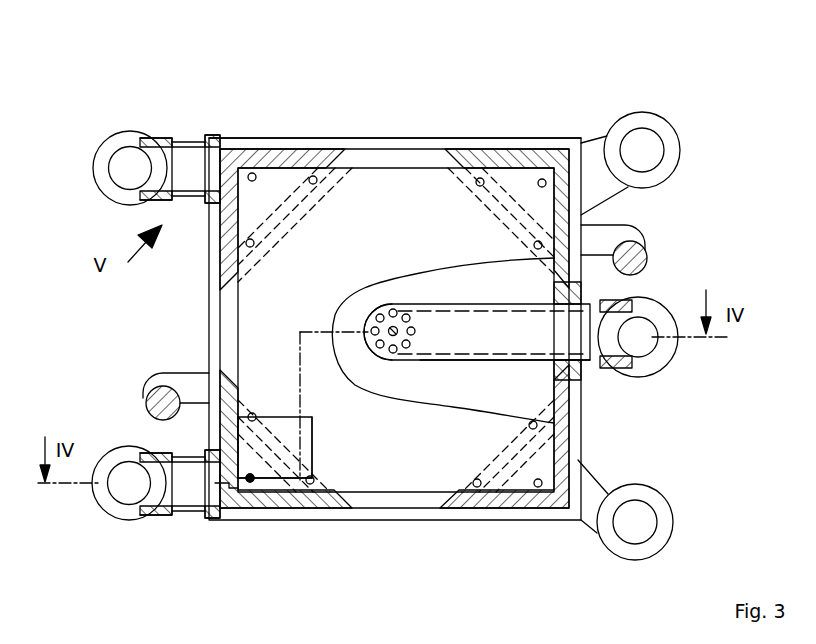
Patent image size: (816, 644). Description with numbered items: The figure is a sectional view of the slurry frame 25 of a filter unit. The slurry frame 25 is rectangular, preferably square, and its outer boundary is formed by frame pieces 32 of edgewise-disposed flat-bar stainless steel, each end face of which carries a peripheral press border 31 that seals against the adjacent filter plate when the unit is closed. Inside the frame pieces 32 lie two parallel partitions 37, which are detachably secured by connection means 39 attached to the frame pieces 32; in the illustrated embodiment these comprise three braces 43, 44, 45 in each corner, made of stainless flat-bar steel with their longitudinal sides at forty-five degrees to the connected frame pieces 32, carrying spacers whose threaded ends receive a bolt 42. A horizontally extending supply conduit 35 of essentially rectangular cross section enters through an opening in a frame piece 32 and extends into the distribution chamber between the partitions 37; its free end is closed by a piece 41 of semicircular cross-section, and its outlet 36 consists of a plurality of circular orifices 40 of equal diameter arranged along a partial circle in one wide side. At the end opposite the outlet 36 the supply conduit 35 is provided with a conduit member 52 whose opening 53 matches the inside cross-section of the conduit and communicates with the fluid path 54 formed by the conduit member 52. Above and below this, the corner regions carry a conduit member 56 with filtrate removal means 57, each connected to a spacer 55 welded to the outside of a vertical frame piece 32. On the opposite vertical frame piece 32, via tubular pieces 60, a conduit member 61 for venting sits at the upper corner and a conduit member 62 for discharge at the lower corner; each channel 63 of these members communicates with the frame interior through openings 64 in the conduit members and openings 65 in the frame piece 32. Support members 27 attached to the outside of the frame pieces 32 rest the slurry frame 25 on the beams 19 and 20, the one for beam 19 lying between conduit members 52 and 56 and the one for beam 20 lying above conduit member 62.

The beam 19 is at (635, 262).
The beam 20 is at (158, 402).
The slurry frame 25 is at (445, 112).
The support member 27 is at (598, 232).
The press border 31 is at (490, 147).
The frame piece 32 is at (413, 146).
The supply conduit 35 is at (505, 292).
The outlet 36 is at (428, 355).
The partition 37 is at (368, 195).
The connection means 39 is at (300, 135).
The orifice 40 is at (414, 330).
The piece 41 is at (368, 347).
The bolt 42 is at (395, 334).
The brace 43 is at (245, 505).
The brace 44 is at (265, 495).
The brace 45 is at (300, 486).
The conduit member 52 is at (647, 367).
The opening 53 is at (620, 365).
The fluid path 54 is at (640, 347).
The spacer 55 is at (597, 155).
The conduit member 56 is at (650, 120).
The filtrate removal means 57 is at (652, 158).
The tubular piece 60 is at (190, 177).
The conduit member 61 is at (108, 147).
The conduit member 62 is at (106, 512).
The channel 63 is at (128, 158).
The opening 64 is at (157, 177).
The opening 65 is at (217, 167).